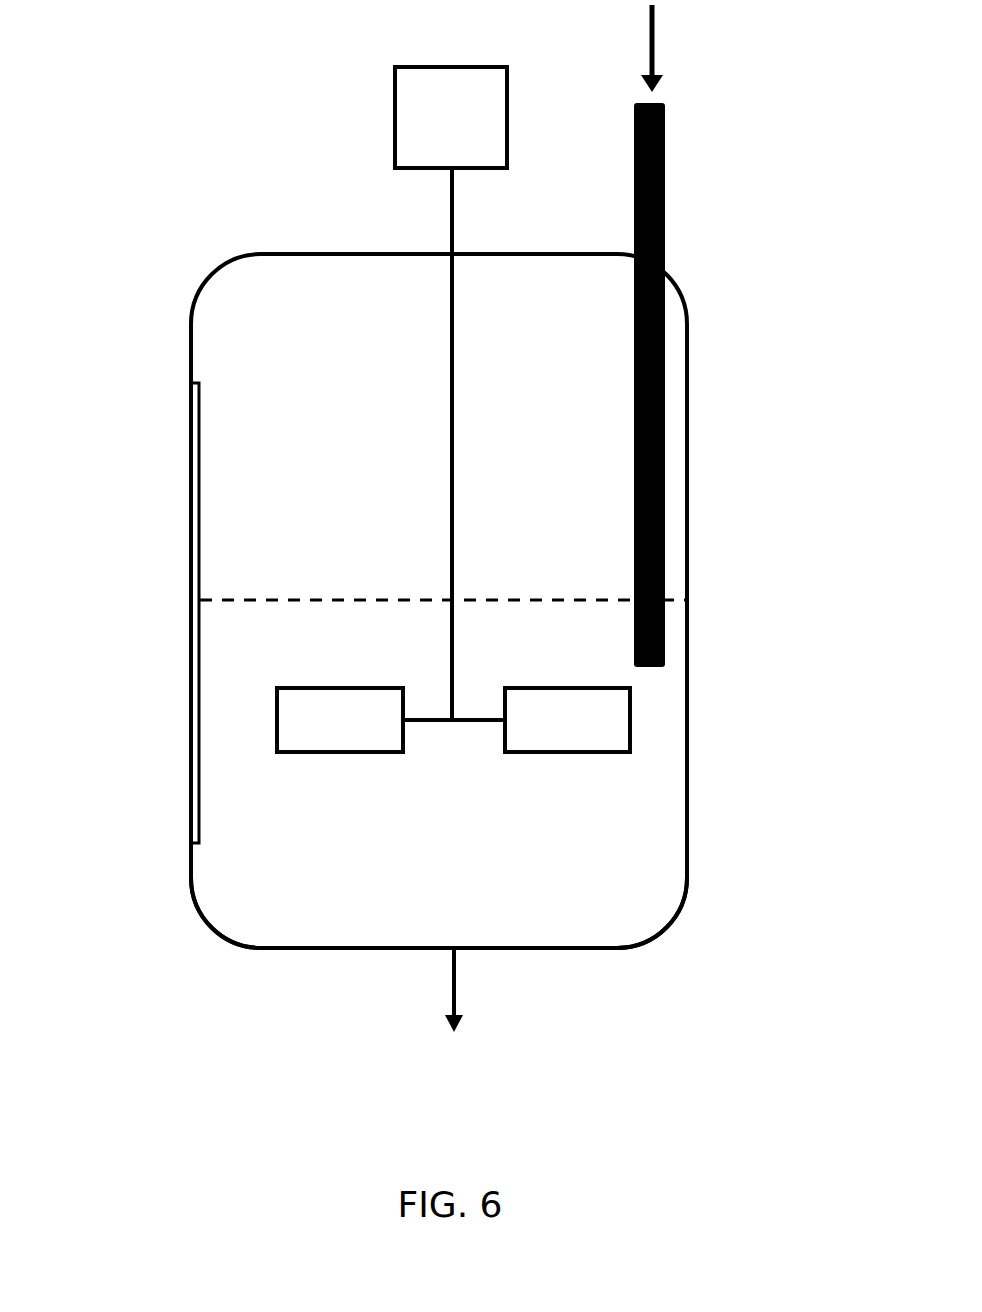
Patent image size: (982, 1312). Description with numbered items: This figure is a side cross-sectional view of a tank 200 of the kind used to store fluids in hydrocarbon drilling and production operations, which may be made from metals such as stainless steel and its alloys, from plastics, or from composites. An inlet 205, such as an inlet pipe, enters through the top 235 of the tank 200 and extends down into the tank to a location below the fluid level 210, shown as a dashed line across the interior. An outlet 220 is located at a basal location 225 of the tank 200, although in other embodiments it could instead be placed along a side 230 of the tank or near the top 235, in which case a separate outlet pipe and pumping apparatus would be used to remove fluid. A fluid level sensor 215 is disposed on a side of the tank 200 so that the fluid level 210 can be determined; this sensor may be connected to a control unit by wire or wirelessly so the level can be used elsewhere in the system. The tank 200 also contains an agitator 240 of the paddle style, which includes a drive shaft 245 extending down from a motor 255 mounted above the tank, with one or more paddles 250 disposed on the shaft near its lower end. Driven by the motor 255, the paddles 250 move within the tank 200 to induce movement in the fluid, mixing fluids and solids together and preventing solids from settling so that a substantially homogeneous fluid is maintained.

The tank 200 is at (82, 58).
The inlet 205 is at (688, 108).
The fluid level 210 is at (389, 586).
The fluid level sensor 215 is at (195, 525).
The outlet 220 is at (433, 990).
The basal location 225 is at (212, 949).
The side 230 is at (714, 520).
The top 235 is at (180, 277).
The agitator 240 is at (419, 203).
The drive shaft 245 is at (453, 423).
The paddles 250 is at (453, 720).
The motor 255 is at (451, 117).